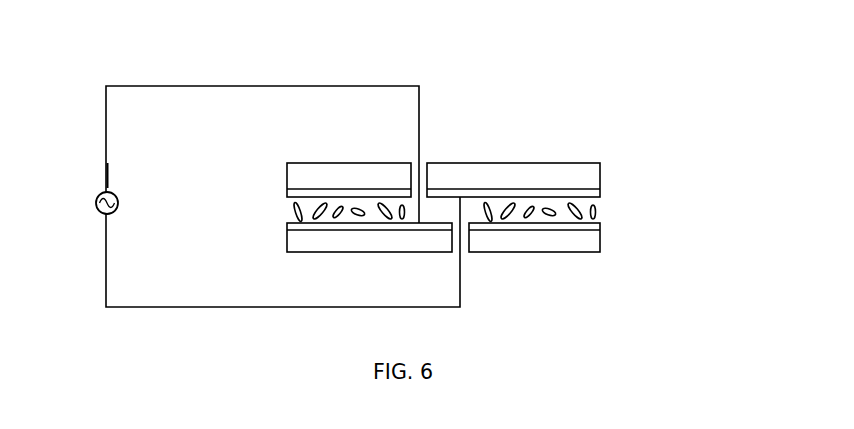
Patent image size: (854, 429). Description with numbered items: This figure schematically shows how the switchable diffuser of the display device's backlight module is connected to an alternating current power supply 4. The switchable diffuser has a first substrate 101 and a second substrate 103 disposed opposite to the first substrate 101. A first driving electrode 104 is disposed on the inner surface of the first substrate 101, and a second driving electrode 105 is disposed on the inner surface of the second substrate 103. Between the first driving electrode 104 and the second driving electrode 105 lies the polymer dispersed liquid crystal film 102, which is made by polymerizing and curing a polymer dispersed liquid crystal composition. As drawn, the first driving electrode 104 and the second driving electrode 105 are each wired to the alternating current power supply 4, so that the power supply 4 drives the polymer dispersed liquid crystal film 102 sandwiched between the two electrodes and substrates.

The alternating current power supply 4 is at (94, 203).
The first substrate 101 is at (600, 174).
The polymer dispersed liquid crystal film 102 is at (600, 213).
The second substrate 103 is at (594, 245).
The first driving electrode 104 is at (288, 190).
The second driving electrode 105 is at (287, 226).